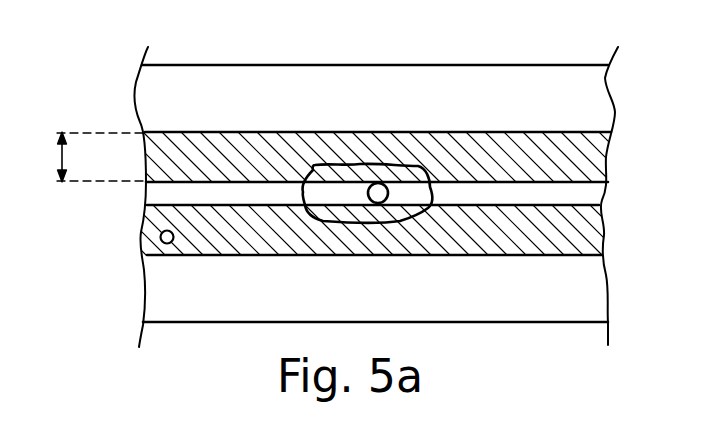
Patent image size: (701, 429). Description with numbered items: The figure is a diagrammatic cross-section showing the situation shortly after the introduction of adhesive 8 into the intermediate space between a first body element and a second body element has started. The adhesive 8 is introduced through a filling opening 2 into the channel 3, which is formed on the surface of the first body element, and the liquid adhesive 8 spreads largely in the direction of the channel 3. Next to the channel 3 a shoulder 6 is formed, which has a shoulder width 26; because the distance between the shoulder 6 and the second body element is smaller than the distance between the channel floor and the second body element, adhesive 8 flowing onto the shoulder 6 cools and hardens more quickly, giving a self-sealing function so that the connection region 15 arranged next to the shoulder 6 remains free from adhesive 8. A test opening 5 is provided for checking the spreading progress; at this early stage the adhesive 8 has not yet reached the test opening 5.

The connection region 15 is at (427, 118).
The shoulder 6 is at (502, 160).
The channel 3 is at (255, 197).
The test opening 5 is at (161, 240).
The adhesive 8 is at (327, 163).
The filling opening 2 is at (378, 190).
The shoulder width 26 is at (86, 157).